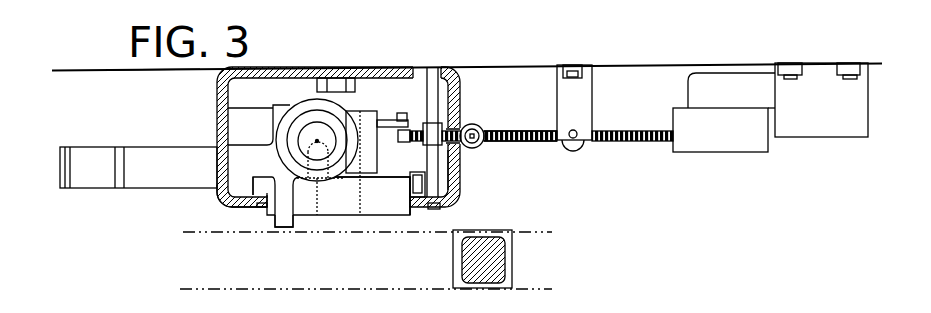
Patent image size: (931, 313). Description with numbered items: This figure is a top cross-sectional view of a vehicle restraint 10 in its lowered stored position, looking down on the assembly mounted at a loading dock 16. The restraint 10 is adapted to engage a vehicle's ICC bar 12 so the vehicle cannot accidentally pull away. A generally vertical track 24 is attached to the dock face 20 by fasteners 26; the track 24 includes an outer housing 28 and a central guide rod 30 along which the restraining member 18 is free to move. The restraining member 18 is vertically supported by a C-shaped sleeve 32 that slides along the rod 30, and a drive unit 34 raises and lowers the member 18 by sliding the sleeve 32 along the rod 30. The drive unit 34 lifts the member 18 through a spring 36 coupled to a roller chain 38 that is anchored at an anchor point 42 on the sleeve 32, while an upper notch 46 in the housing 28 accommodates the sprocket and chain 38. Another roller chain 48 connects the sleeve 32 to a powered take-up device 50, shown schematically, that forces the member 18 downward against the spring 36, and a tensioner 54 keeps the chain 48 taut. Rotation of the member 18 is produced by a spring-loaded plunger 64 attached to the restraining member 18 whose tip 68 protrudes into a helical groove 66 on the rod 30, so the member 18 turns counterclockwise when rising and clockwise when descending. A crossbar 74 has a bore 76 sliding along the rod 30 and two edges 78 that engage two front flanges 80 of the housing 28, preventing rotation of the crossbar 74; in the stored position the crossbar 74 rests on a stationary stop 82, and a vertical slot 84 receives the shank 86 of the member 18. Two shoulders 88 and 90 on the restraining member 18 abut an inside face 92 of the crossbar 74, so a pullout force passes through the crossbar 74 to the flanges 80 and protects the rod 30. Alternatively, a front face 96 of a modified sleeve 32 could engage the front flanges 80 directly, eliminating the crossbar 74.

The vehicle restraint 10 is at (623, 207).
The ICC bar 12 is at (533, 230).
The loading dock 16 is at (100, 72).
The restraining member 18 is at (88, 189).
The dock face 20 is at (152, 72).
The track 24 is at (222, 200).
The fasteners 26 is at (338, 78).
The outer housing 28 is at (217, 92).
The central guide rod 30 is at (305, 112).
The C-shaped sleeve 32 is at (362, 110).
The drive unit 34 is at (763, 165).
The spring 36 is at (482, 146).
The roller chain 38 is at (418, 124).
The anchor point 42 is at (402, 113).
The upper notch 46 is at (463, 150).
The roller chain 48 is at (513, 131).
The powered take-up device 50 is at (736, 102).
The tensioner 54 is at (593, 116).
The spring-loaded plunger 64 is at (328, 181).
The helical groove 66 is at (317, 148).
The tip 68 is at (318, 146).
The crossbar 74 is at (368, 206).
The bore 76 is at (305, 135).
The edges 78 is at (262, 208).
The front flanges 80 is at (428, 208).
The stationary stop 82 is at (450, 168).
The vertical slot 84 is at (318, 213).
The shank 86 is at (142, 146).
The shoulder 88 is at (273, 112).
The shoulder 90 is at (283, 227).
The inside face 92 is at (390, 176).
The front face 96 is at (367, 180).